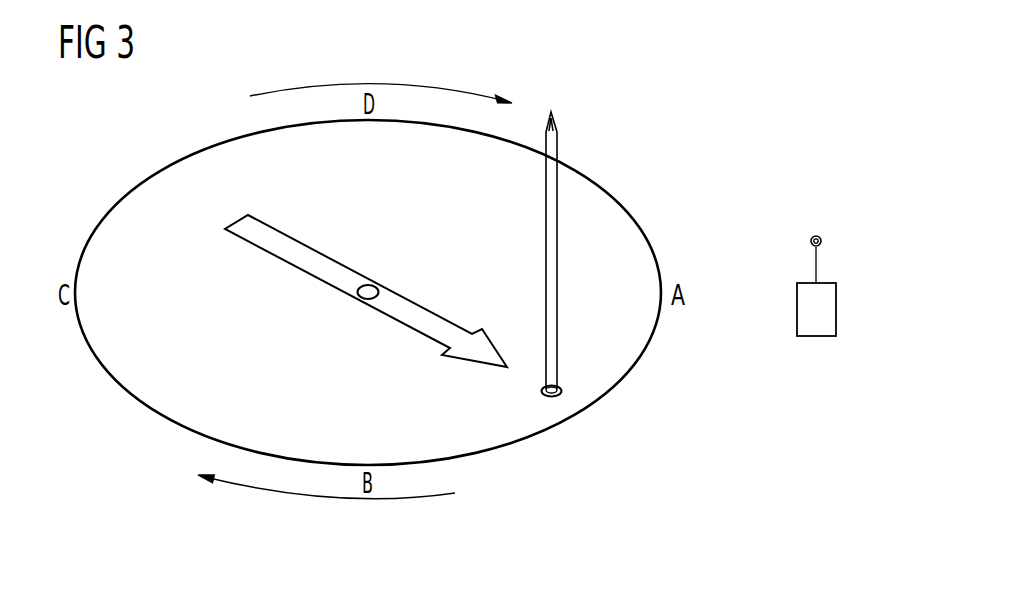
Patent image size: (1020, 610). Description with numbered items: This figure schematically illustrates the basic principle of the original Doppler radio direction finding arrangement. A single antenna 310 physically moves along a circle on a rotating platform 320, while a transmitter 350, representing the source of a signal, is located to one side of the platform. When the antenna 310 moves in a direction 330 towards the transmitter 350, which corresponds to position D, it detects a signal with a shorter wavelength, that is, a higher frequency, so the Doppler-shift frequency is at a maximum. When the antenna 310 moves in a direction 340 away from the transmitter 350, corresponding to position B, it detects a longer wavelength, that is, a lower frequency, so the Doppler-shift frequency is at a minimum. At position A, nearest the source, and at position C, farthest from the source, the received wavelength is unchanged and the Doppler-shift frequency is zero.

The antenna 310 is at (557, 246).
The rotating platform 320 is at (618, 197).
The direction towards the transmitter 330 is at (373, 84).
The direction away from the transmitter 340 is at (348, 501).
The transmitter 350 is at (792, 267).